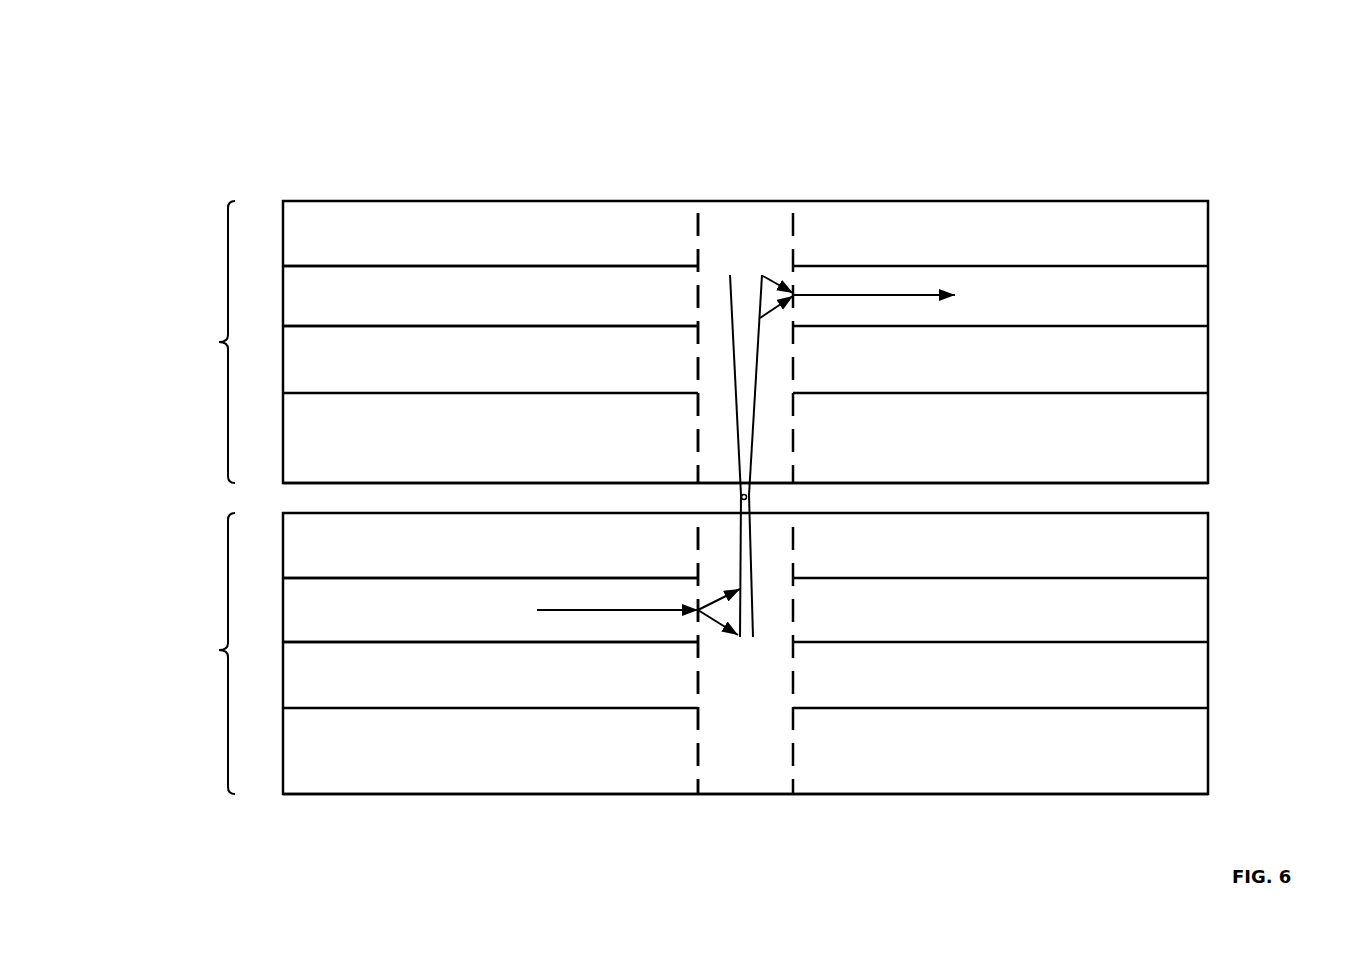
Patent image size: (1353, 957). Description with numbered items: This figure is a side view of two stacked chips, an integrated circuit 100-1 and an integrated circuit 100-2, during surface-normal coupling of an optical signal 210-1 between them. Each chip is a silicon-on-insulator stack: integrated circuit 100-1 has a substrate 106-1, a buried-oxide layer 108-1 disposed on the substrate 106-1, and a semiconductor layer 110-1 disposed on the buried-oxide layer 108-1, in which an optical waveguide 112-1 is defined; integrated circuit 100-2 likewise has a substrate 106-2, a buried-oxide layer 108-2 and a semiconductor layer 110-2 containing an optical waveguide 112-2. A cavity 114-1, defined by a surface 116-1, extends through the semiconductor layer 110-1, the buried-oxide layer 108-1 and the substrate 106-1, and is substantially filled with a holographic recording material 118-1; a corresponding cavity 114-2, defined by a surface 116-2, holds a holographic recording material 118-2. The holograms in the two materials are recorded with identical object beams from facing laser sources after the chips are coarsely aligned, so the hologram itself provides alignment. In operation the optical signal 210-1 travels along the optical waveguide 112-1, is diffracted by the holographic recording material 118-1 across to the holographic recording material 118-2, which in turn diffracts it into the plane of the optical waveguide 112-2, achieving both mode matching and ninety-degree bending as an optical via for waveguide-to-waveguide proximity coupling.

The integrated circuit 100-1 is at (649, 653).
The integrated circuit 100-2 is at (649, 342).
The substrate 106-1 is at (745, 761).
The substrate 106-2 is at (745, 449).
The buried-oxide layer 108-1 is at (745, 679).
The buried-oxide layer 108-2 is at (745, 365).
The semiconductor layer 110-1 is at (515, 600).
The semiconductor layer 110-2 is at (516, 290).
The optical waveguide 112-1 is at (745, 588).
The optical waveguide 112-2 is at (745, 274).
The cavity 114-1 is at (745, 660).
The cavity 114-2 is at (745, 348).
The surface 116-1 is at (693, 743).
The surface 116-2 is at (698, 360).
The holographic recording material 118-1 is at (768, 758).
The holographic recording material 118-2 is at (725, 238).
The optical signal 210-1 is at (533, 815).